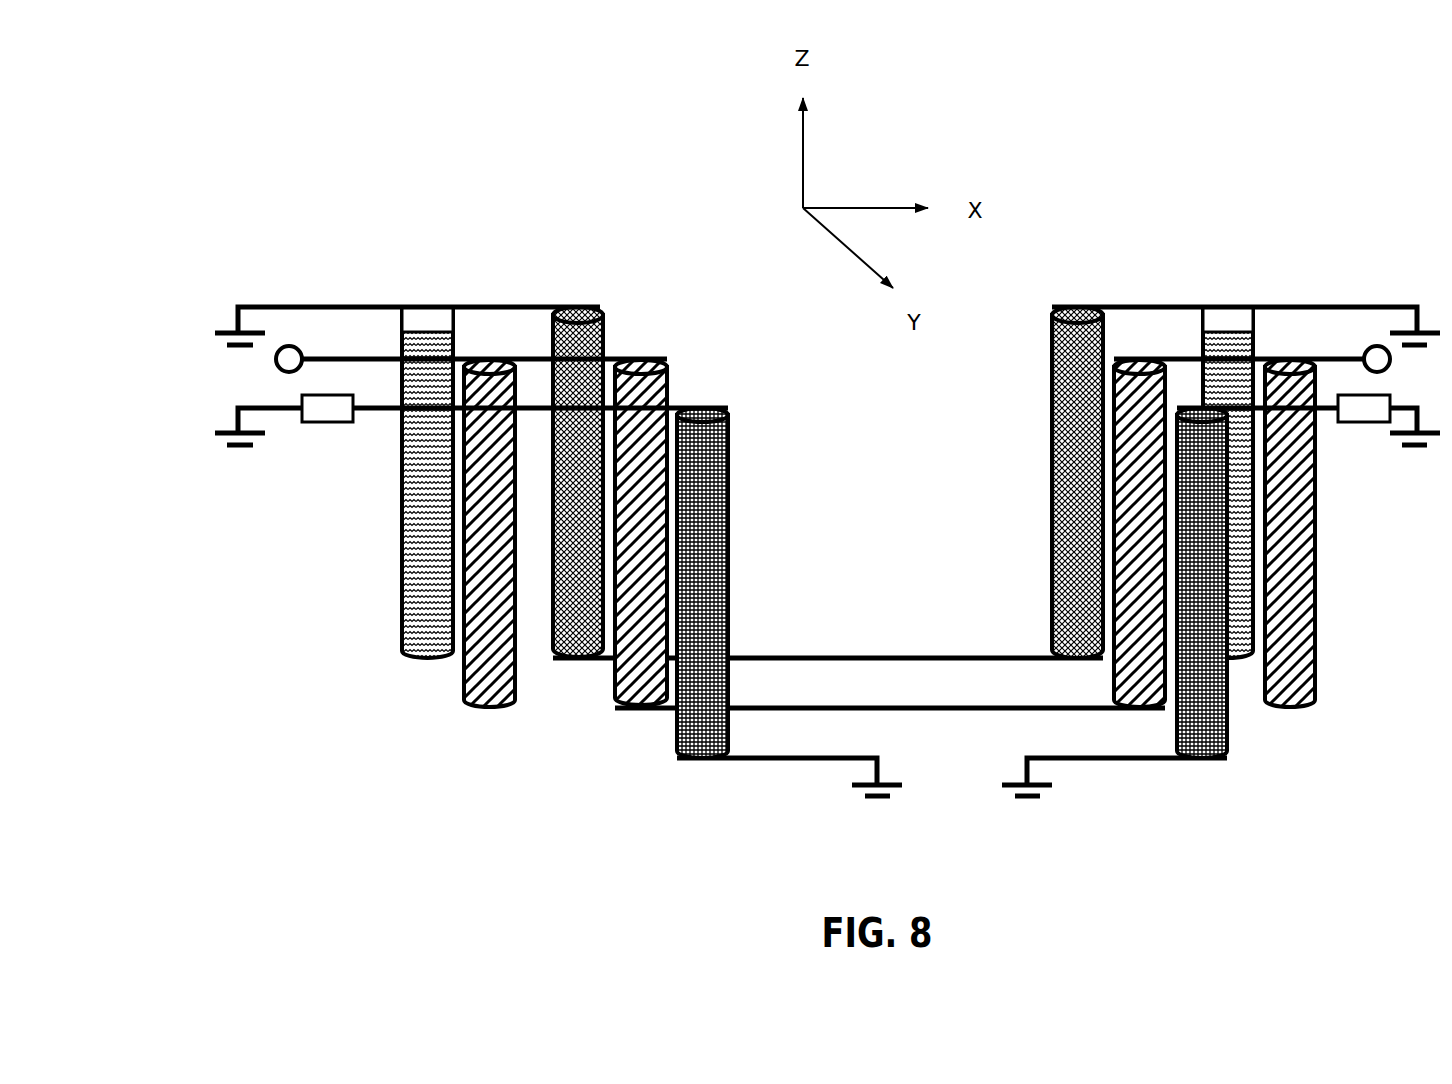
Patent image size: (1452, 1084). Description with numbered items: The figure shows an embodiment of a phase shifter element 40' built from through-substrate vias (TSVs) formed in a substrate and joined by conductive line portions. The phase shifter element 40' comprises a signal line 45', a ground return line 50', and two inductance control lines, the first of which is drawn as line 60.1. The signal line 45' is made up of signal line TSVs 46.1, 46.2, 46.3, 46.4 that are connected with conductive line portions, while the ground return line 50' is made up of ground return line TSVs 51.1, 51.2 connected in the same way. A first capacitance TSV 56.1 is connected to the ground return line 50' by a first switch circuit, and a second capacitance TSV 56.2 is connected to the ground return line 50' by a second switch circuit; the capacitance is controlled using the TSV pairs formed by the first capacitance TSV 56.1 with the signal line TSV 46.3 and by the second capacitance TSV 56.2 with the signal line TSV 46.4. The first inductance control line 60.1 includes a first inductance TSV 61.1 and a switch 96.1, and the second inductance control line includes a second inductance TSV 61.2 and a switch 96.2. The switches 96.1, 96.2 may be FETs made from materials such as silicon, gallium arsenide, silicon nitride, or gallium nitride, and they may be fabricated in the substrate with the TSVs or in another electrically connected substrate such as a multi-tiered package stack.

The phase shifter element 40' is at (785, 448).
The ground return line 50' is at (367, 326).
The signal line 45' is at (424, 363).
The bias supply line 60.1 is at (200, 406).
The switch 96.1 is at (327, 408).
The switch 96.2 is at (1364, 408).
The first capacitance TSV 56.1 is at (403, 655).
The second capacitance TSV 56.2 is at (1240, 658).
The signal line TSV 46.1 is at (620, 710).
The signal line TSV 46.2 is at (1142, 702).
The signal line TSV 46.3 is at (480, 708).
The signal line TSV 46.4 is at (1297, 707).
The ground return line TSV 51.1 is at (562, 657).
The ground return line TSV 51.2 is at (1053, 312).
The first inductance TSV 61.1 is at (692, 758).
The second inductance TSV 61.2 is at (1210, 760).